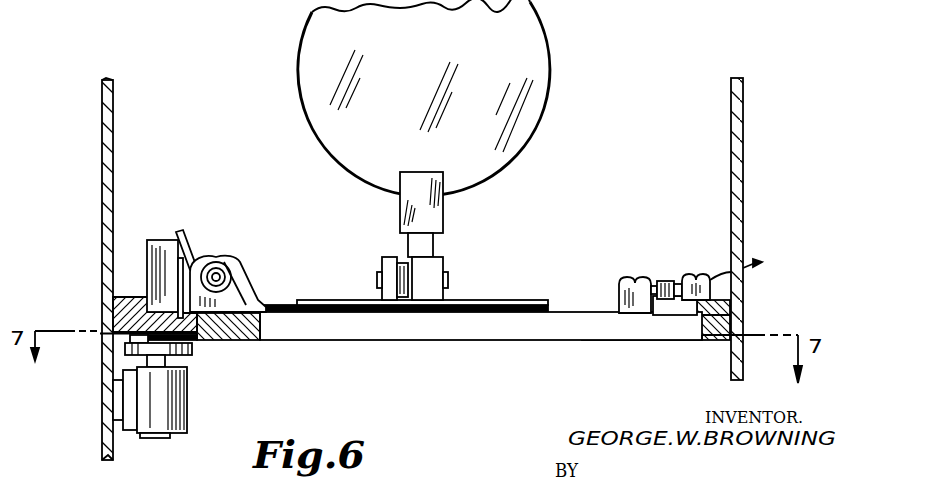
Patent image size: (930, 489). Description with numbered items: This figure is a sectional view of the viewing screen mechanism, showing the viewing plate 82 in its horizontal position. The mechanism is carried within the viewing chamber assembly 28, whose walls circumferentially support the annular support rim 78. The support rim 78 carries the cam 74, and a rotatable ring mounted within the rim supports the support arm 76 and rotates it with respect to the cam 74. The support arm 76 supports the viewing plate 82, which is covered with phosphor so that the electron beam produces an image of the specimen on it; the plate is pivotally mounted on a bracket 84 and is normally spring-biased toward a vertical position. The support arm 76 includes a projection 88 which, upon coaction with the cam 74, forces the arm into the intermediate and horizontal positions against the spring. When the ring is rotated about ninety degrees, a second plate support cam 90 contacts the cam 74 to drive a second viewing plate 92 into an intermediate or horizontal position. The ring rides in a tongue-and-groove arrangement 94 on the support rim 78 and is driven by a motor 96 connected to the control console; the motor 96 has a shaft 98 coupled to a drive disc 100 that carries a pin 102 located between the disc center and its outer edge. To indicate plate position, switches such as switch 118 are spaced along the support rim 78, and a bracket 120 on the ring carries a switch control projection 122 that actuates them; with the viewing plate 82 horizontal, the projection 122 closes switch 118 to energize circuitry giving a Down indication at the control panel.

The viewing chamber assembly 28 is at (114, 175).
The cam 74 is at (165, 240).
The support arm 76 is at (250, 292).
The support rim 78 is at (143, 297).
The viewing plate 82 is at (517, 298).
The bracket 84 is at (213, 258).
The projection 88 is at (186, 232).
The second plate support cam 90 is at (394, 240).
The viewing plate 92 is at (549, 82).
The tongue-and-groove arrangement 94 is at (205, 338).
The motor 96 is at (180, 436).
The shaft 98 is at (168, 356).
The drive disc 100 is at (124, 352).
The pin 102 is at (108, 340).
The switch 118 is at (718, 245).
The bracket 120 is at (632, 276).
The switch control projection 122 is at (657, 280).